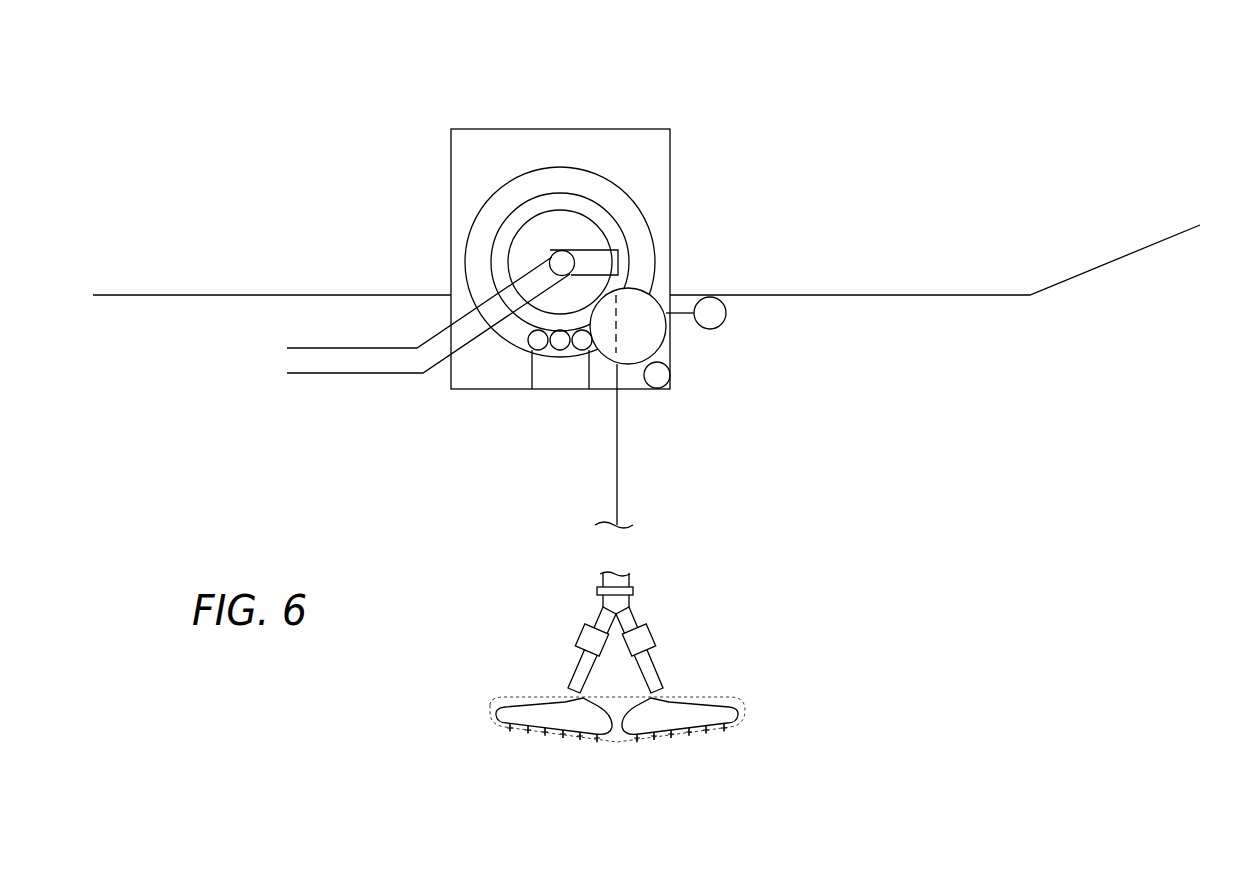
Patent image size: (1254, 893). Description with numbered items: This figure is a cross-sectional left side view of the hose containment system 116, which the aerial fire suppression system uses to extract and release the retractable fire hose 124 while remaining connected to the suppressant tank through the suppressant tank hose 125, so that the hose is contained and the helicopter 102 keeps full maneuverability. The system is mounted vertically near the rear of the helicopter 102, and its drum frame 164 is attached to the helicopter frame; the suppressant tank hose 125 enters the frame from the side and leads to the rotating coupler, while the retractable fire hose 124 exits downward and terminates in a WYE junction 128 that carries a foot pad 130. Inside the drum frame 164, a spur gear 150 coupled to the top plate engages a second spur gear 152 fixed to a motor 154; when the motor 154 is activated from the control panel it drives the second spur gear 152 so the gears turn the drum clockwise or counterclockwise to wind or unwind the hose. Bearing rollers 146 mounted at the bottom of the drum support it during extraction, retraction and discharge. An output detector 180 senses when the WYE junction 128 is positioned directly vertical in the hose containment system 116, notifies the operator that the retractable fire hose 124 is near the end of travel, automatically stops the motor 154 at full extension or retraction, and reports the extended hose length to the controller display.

The helicopter 102 is at (1110, 242).
The hose containment system 116 is at (632, 106).
The retractable fire hose 124 is at (617, 458).
The suppressant tank hose 125 is at (355, 373).
The WYE junction 128 is at (627, 617).
The foot pad 130 is at (710, 700).
The bearing rollers 146 is at (560, 352).
The spur gear 150 is at (622, 242).
The second spur gear 152 is at (640, 337).
The motor 154 is at (726, 313).
The drum frame 164 is at (451, 183).
The output detector 180 is at (657, 378).